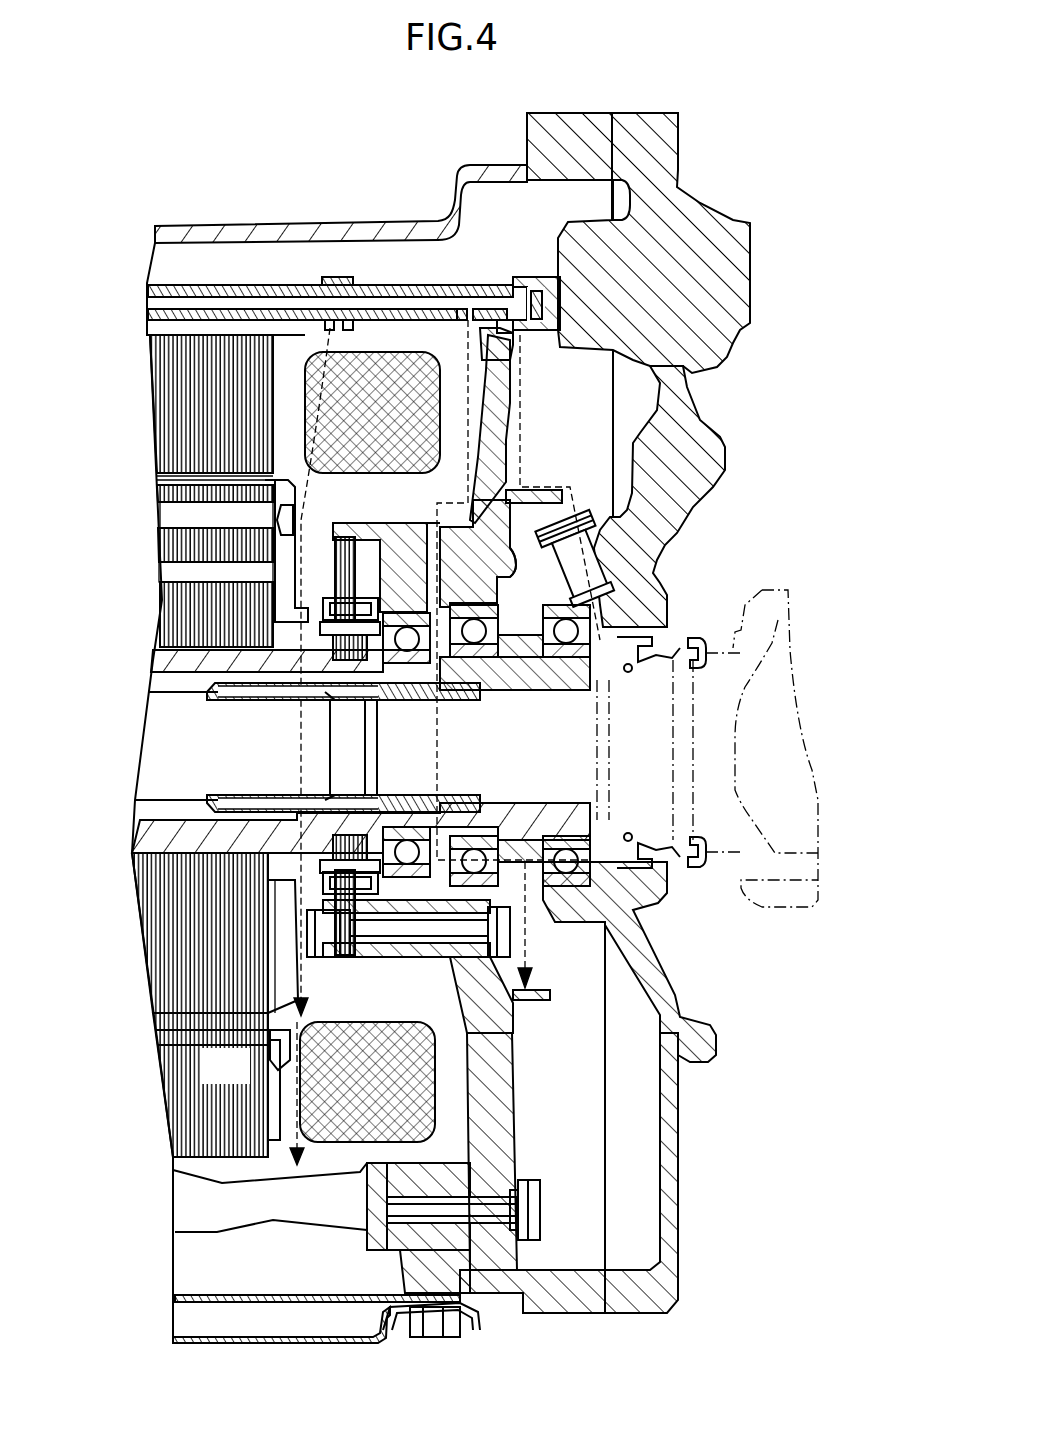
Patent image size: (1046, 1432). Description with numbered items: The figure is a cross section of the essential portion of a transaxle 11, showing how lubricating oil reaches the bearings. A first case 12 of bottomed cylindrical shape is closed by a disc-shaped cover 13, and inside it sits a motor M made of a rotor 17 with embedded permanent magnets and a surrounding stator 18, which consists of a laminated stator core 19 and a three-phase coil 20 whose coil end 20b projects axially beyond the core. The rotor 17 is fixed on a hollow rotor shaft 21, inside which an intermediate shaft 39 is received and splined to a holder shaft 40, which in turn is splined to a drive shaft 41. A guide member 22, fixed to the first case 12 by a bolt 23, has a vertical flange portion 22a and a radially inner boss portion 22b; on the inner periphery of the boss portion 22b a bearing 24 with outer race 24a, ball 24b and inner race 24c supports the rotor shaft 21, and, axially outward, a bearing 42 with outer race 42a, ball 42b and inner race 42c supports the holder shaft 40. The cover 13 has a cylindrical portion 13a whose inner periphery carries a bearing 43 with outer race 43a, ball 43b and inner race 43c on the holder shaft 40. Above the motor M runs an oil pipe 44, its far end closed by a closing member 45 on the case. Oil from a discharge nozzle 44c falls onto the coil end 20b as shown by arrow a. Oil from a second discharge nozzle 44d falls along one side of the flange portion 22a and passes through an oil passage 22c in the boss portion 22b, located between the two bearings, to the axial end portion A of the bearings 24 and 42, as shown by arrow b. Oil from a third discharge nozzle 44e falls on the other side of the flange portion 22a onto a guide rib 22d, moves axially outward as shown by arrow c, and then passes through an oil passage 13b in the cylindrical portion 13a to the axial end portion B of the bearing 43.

The transaxle 11 is at (265, 140).
The first case 12 is at (262, 227).
The cover 13 is at (742, 291).
The cylindrical portion 13a is at (686, 500).
The oil passage 13b is at (600, 560).
The rotor 17 is at (150, 906).
The stator 18 is at (200, 1165).
The stator core 19 is at (278, 1073).
The three-phase coil 20 is at (192, 1130).
The coil end 20b is at (352, 472).
The rotor shaft 21 is at (162, 663).
The guide member 22 is at (458, 965).
The flange portion 22a is at (508, 408).
The boss portion 22b is at (510, 578).
The oil passage 22c is at (436, 525).
The guide rib 22d is at (546, 496).
The bolt 23 is at (540, 1212).
The bearing 24 is at (413, 675).
The outer race 24a is at (352, 828).
The ball 24b is at (438, 830).
The inner race 24c is at (405, 830).
The intermediate shaft 39 is at (152, 750).
The holder shaft 40 is at (232, 694).
The drive shaft 41 is at (557, 750).
The bearing 42 is at (474, 672).
The outer race 42a is at (440, 884).
The ball 42b is at (532, 835).
The inner race 42c is at (487, 833).
The bearing 43 is at (608, 894).
The outer race 43a is at (601, 598).
The ball 43b is at (528, 673).
The inner race 43c is at (566, 659).
The oil pipe 44 is at (240, 284).
The discharge nozzle 44c is at (342, 328).
The discharge nozzle 44d is at (465, 326).
The discharge nozzle 44e is at (510, 336).
The closing member 45 is at (541, 280).
The one axial end portion A is at (432, 592).
The one axial end portion B is at (612, 893).
The motor M is at (243, 1165).
The arrow a is at (332, 340).
The arrow b is at (466, 396).
The arrow c is at (522, 378).